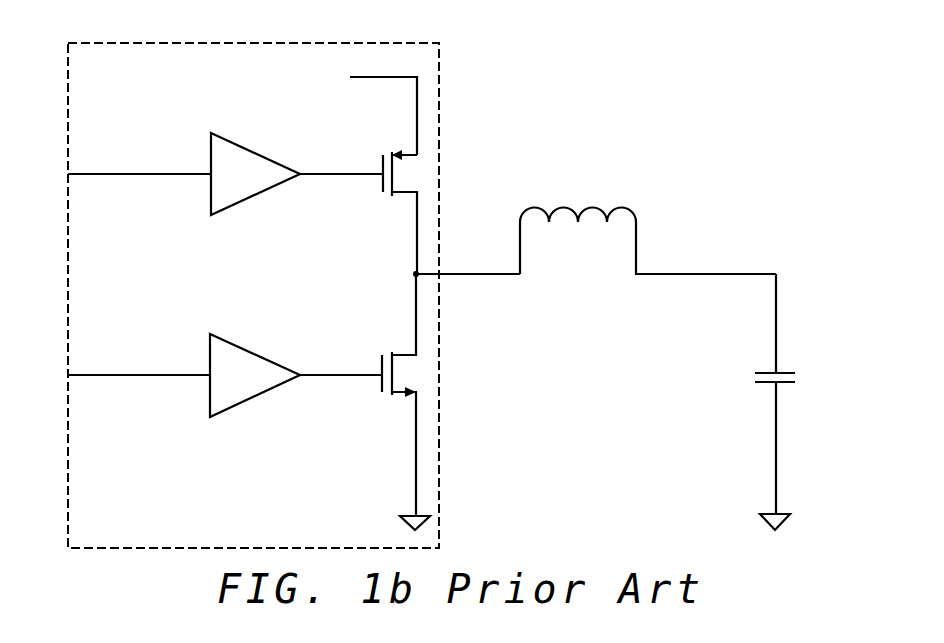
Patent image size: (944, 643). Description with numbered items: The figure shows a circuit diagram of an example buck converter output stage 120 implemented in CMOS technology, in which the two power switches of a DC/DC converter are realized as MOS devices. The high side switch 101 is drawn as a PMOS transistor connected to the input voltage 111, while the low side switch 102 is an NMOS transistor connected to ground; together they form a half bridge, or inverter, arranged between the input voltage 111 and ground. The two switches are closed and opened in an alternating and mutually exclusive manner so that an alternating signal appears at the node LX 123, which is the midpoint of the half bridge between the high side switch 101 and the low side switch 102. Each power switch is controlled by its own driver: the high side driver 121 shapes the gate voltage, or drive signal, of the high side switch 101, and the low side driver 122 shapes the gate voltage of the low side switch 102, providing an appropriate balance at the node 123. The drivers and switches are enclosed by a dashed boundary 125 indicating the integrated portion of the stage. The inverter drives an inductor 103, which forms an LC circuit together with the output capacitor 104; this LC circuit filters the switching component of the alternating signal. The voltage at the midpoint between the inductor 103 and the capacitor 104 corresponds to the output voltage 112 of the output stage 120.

The high side switch 101 is at (422, 172).
The low side switch 102 is at (421, 376).
The inductor 103 is at (572, 247).
The output capacitor 104 is at (803, 378).
The input voltage 111 is at (422, 68).
The output voltage 112 is at (776, 260).
The output stage 120 is at (693, 154).
The high side driver 121 is at (240, 198).
The low side driver 122 is at (240, 400).
The node LX 123 is at (418, 270).
The integrated circuit boundary 125 is at (440, 325).